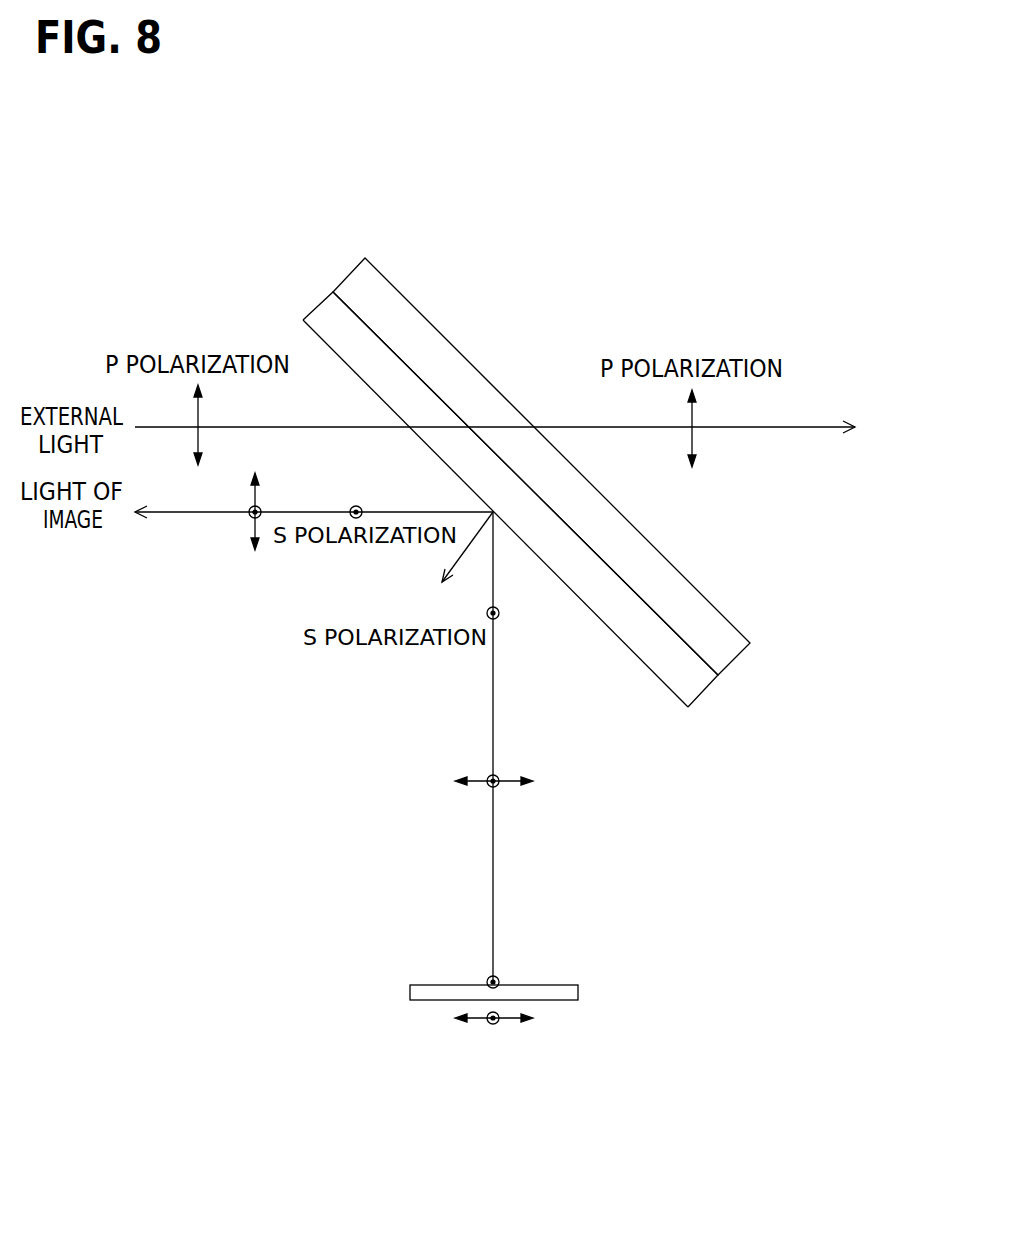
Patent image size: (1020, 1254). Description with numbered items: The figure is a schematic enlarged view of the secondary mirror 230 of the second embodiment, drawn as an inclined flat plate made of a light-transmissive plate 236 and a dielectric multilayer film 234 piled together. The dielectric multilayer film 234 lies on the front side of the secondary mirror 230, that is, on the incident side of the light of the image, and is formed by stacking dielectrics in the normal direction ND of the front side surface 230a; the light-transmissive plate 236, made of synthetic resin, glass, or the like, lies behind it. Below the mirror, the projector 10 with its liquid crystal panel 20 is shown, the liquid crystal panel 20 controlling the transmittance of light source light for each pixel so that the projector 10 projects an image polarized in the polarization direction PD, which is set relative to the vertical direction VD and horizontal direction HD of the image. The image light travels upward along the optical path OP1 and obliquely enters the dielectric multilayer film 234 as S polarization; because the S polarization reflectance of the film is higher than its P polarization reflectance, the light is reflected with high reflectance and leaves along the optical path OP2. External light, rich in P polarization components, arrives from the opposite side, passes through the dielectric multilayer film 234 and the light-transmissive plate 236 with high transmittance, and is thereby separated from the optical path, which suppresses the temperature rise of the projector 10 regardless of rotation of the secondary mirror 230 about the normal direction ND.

The secondary mirror 230 is at (564, 517).
The front side surface 230a is at (635, 658).
The dielectric multilayer film 234 is at (698, 697).
The light-transmissive plate 236 is at (737, 660).
The projector 10 is at (521, 971).
The liquid crystal panel 20 is at (592, 970).
The optical path 1 OP1 is at (493, 892).
The optical path 2 OP2 is at (167, 513).
The polarization direction PD is at (500, 977).
The normal direction ND is at (457, 562).
The horizontal direction HD is at (249, 515).
The vertical direction VD is at (252, 530).